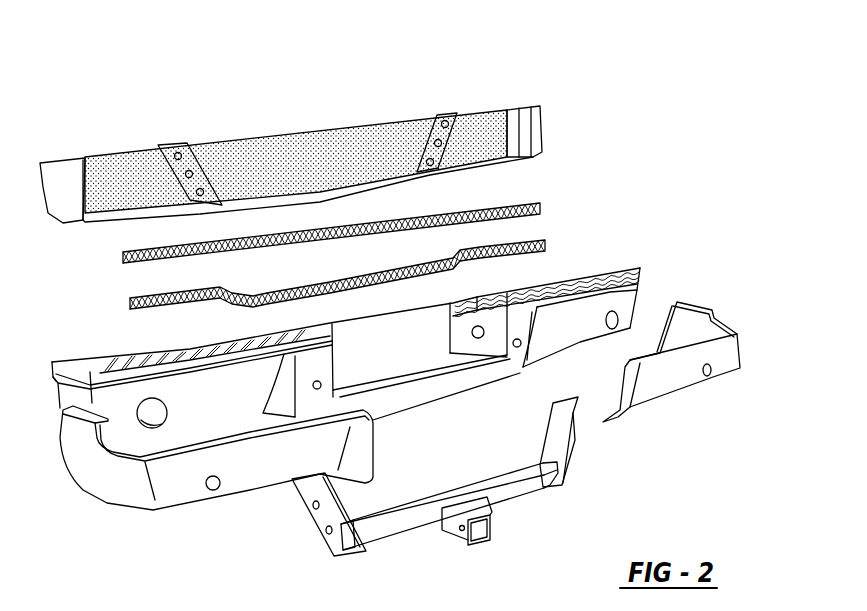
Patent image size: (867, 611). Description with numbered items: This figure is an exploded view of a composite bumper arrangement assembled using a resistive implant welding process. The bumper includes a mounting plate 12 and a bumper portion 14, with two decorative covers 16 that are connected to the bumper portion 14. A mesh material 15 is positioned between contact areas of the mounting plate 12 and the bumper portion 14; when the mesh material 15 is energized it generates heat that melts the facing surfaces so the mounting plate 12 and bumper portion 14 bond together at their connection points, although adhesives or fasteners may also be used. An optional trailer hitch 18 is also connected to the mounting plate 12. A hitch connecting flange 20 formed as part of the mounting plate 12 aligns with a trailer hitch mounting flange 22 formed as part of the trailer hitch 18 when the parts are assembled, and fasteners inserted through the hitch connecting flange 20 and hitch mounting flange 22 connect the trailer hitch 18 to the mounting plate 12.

The mounting plate 12 is at (485, 125).
The bumper portion 14 is at (630, 268).
The mesh material 15 is at (547, 204).
The decorative cover 16 is at (738, 365).
The trailer hitch 18 is at (527, 492).
The hitch connecting flange 20 is at (173, 147).
The trailer hitch mounting flange 22 is at (323, 517).